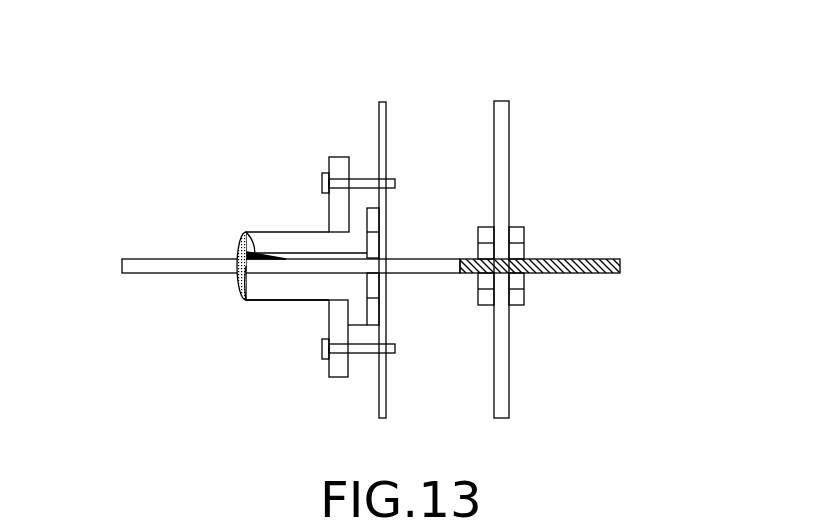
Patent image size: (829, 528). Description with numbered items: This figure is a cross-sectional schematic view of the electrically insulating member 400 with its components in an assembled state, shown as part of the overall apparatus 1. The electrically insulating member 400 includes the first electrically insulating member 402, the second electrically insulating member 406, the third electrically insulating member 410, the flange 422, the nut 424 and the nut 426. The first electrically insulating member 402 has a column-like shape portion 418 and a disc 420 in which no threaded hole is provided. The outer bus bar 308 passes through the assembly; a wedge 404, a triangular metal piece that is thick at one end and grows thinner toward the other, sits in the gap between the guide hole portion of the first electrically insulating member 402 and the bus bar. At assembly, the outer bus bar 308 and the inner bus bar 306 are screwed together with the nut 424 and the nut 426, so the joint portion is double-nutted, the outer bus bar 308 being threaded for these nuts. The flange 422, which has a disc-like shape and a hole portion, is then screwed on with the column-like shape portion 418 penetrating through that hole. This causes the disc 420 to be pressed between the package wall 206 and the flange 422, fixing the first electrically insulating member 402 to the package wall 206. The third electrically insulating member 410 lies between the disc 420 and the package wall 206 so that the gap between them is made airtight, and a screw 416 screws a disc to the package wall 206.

The apparatus 1 is at (630, 125).
The package wall 206 is at (379, 120).
The inner bus bar 306 is at (494, 378).
The outer bus bar 308 is at (150, 281).
The electrically insulating member 400 is at (228, 149).
The first electrically insulating member 402 is at (282, 226).
The wedge 404 is at (241, 232).
The second electrically insulating member 406 is at (238, 287).
The third electrically insulating member 410 is at (372, 217).
The screw 416 is at (321, 178).
The column-like shape portion 418 is at (278, 300).
The disc 420 is at (352, 323).
The flange 422 is at (338, 158).
The nut 424 is at (522, 290).
The nut 426 is at (483, 290).